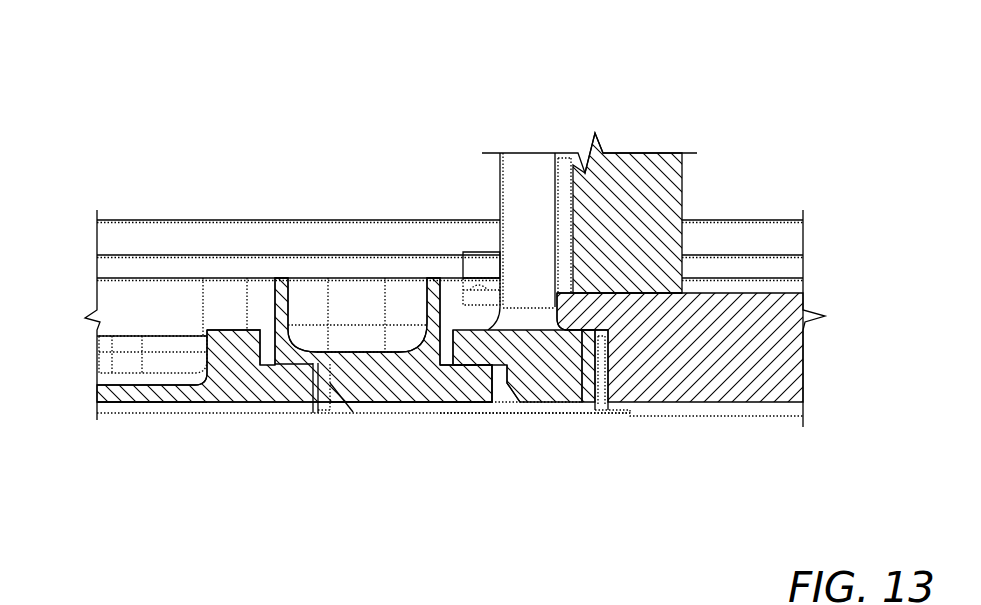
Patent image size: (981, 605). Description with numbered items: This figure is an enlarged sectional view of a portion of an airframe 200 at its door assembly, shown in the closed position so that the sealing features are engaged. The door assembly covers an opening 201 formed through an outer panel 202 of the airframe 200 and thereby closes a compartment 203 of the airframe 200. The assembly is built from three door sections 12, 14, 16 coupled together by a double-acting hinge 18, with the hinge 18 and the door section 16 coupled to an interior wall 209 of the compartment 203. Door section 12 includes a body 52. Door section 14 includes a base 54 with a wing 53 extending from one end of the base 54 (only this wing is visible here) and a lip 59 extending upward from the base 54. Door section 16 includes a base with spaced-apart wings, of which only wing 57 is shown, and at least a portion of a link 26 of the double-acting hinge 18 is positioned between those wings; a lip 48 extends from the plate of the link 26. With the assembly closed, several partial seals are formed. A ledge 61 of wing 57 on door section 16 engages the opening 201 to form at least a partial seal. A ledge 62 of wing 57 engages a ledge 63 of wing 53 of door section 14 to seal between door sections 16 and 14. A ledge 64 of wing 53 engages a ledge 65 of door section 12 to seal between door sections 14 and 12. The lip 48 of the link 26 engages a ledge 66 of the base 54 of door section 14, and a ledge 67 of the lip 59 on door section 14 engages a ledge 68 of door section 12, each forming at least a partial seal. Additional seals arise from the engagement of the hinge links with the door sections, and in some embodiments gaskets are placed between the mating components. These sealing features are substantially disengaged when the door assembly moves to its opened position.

The airframe 200 is at (130, 118).
The compartment 203 is at (263, 117).
The door section 12 is at (233, 420).
The door section 14 is at (390, 428).
The door section 16 is at (547, 418).
The double-acting hinge 18 is at (363, 407).
The link 26 is at (533, 233).
The lip 48 is at (475, 248).
The body 52 is at (180, 422).
The wing 53 is at (388, 363).
The base 54 is at (315, 272).
The wing 57 is at (567, 357).
The lip 59 is at (213, 312).
The ledge 61 is at (590, 353).
The ledge 62 is at (497, 342).
The ledge 63 is at (497, 342).
The ledge 64 is at (294, 364).
The ledge 65 is at (282, 367).
The ledge 66 is at (474, 280).
The ledge 67 is at (157, 333).
The ledge 68 is at (112, 340).
The opening 201 is at (597, 320).
The outer panel 202 is at (712, 363).
The interior wall 209 is at (652, 157).